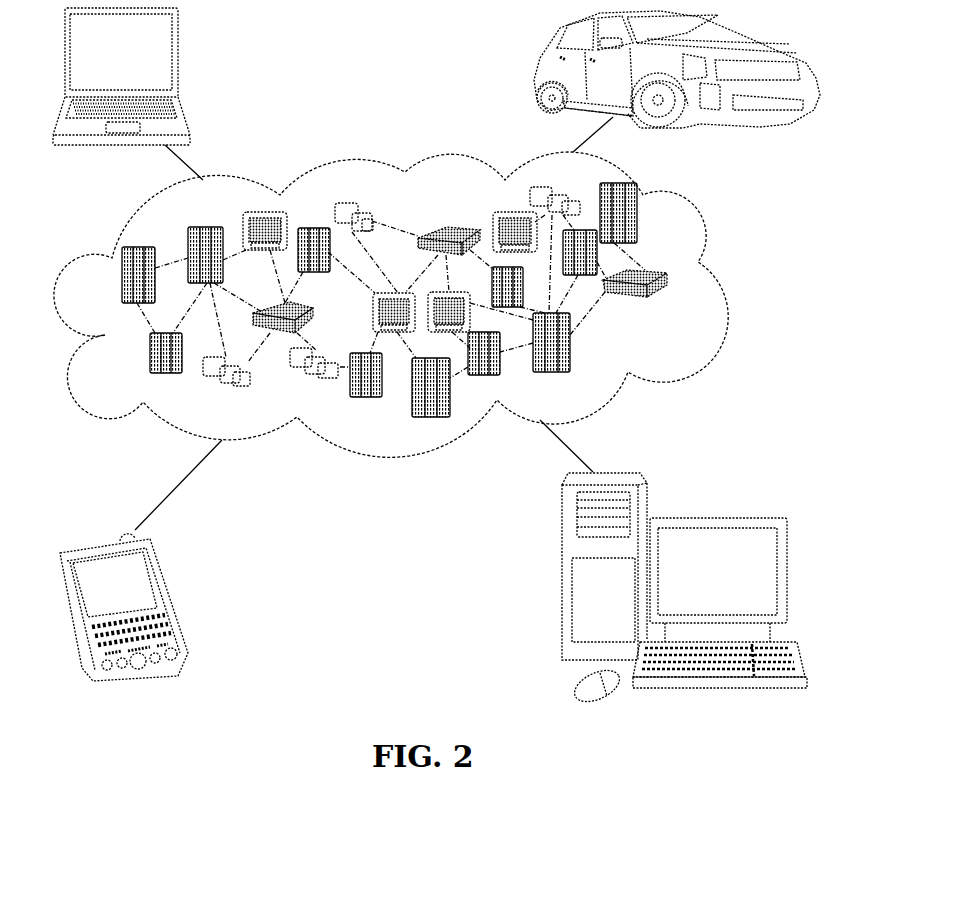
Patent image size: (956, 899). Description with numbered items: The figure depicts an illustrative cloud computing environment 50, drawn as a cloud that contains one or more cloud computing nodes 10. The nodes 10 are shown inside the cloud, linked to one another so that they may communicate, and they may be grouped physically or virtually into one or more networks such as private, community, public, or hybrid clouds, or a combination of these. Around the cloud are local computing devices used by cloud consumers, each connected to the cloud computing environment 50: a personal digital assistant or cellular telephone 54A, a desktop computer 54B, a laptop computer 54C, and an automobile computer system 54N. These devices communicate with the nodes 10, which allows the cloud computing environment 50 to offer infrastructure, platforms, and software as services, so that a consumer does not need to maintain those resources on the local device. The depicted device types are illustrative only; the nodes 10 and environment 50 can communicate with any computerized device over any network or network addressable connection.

The cloud computing node 10 is at (670, 307).
The cloud computing environment 50 is at (718, 281).
The personal digital assistant or cellular telephone 54A is at (173, 595).
The desktop computer 54B is at (717, 518).
The laptop computer 54C is at (178, 59).
The automobile computer system 54N is at (536, 73).